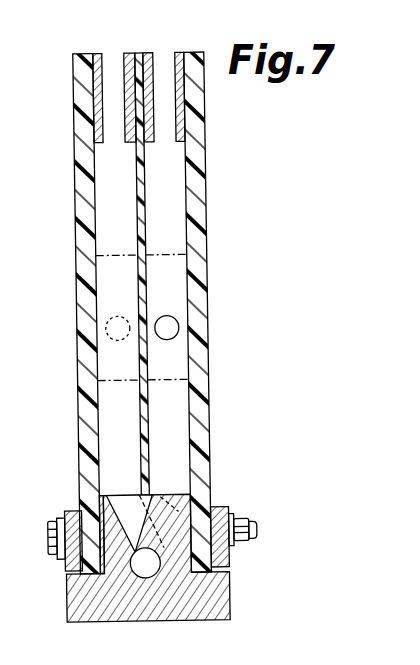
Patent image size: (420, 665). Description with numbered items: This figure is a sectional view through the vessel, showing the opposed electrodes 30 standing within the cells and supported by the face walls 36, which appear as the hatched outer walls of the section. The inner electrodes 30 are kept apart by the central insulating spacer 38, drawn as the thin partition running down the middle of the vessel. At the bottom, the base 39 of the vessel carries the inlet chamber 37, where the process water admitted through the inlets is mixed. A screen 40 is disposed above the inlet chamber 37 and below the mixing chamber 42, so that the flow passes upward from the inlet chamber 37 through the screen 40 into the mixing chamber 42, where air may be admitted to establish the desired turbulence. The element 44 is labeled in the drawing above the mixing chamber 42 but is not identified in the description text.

The tubular bushings 30 is at (117, 57).
The housing side walls 36 is at (79, 300).
The lower chambers 37 is at (124, 448).
The central partition plate 38 is at (130, 58).
The housing base block 39 is at (217, 350).
The lower partition plane 40 is at (110, 384).
The intermediate chambers 42 is at (121, 289).
The upper partition plane 44 is at (106, 255).